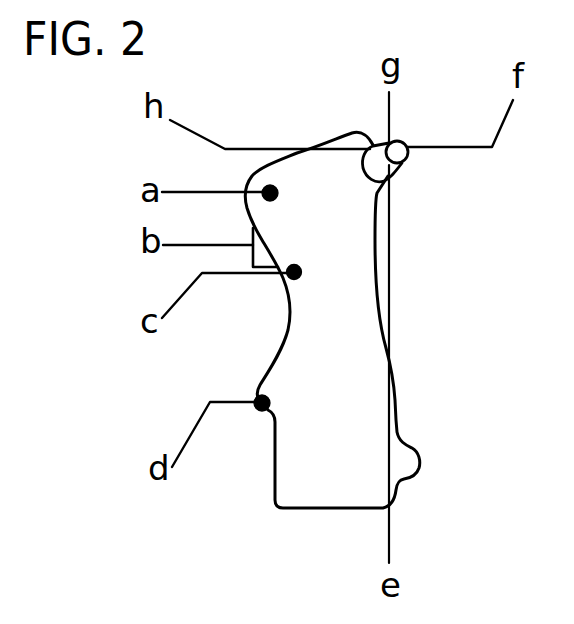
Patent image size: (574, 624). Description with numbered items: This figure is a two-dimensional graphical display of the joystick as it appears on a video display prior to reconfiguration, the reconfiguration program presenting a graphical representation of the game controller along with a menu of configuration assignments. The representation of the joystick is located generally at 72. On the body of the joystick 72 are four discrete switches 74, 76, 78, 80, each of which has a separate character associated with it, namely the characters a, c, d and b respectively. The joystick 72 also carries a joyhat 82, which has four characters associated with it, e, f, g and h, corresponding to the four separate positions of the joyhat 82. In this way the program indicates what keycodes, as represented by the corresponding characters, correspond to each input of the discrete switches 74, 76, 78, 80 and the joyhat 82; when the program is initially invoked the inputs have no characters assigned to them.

The joystick 72 is at (304, 519).
The discrete switch 74 is at (272, 191).
The discrete switch 76 is at (296, 271).
The discrete switch 78 is at (264, 400).
The discrete switch 80 is at (256, 247).
The joyhat 82 is at (402, 162).